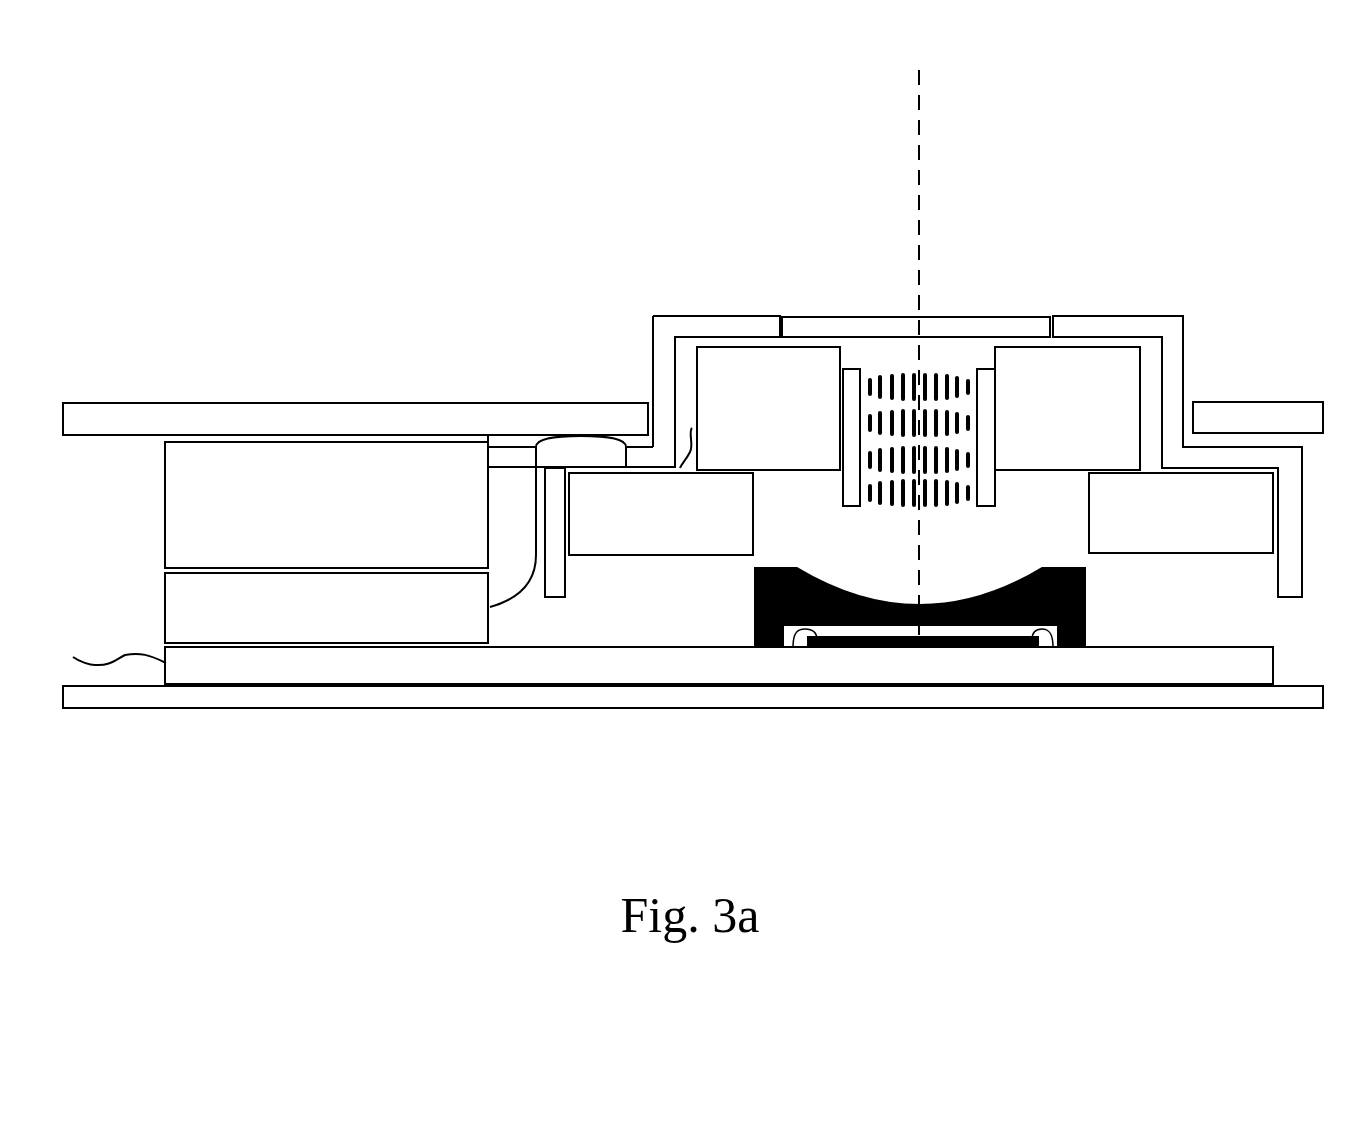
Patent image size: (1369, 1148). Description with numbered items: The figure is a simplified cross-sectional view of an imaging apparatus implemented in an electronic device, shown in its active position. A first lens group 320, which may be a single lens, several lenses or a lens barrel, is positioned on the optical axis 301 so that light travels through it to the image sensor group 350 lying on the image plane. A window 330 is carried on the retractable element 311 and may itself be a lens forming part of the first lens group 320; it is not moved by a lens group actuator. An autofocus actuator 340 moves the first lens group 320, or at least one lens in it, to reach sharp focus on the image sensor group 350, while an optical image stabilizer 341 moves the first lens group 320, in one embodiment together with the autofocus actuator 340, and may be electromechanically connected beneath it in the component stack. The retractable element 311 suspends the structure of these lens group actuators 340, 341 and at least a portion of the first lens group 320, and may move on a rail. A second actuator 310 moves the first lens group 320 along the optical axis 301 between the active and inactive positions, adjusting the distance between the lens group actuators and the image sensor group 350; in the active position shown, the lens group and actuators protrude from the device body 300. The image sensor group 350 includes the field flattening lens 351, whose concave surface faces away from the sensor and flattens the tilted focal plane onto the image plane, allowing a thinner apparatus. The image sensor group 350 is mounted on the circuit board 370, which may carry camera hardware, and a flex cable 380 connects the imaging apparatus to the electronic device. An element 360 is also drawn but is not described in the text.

The device body 300 is at (381, 403).
The optical axis 301 is at (919, 153).
The second actuator 310 is at (268, 468).
The retractable element 311 is at (1115, 316).
The first lens group 320 is at (885, 380).
The window 330 is at (956, 317).
The autofocus actuator 340 is at (714, 388).
The optical image stabilizer 341 is at (680, 512).
The image sensor group 350 is at (908, 647).
The field flattening lens 351 is at (1085, 625).
The circuit board 360 is at (375, 613).
The circuit board 370 is at (263, 673).
The flex cable 380 is at (95, 667).